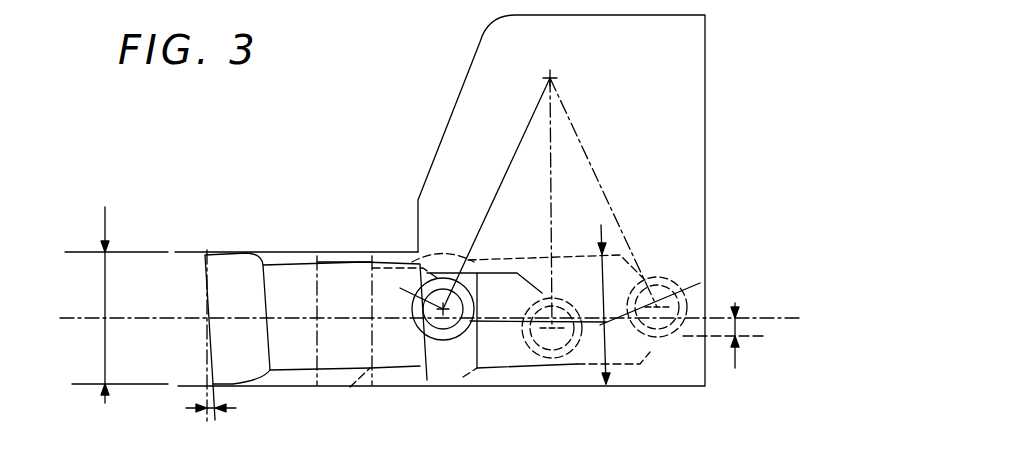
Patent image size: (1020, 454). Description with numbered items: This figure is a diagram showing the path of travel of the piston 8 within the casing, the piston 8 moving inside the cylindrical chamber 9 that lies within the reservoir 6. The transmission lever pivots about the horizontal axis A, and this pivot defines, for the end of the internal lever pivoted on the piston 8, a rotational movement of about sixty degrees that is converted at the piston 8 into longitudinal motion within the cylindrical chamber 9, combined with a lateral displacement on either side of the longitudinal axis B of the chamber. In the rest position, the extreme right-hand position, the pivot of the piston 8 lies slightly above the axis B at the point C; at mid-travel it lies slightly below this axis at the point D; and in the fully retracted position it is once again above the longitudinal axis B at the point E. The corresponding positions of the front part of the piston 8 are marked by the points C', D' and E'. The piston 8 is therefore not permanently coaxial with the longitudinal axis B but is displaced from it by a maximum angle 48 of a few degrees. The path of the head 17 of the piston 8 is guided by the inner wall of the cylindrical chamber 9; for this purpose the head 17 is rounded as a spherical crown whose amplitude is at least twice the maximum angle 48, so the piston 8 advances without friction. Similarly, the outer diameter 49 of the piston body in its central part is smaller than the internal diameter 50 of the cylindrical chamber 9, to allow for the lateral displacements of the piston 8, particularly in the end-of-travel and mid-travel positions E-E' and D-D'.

The reservoir 6 is at (675, 109).
The piston 8 is at (295, 252).
The cylindrical chamber 9 is at (270, 254).
The head 17 is at (249, 253).
The maximum angle 48 is at (236, 408).
The outer diameter 49 is at (601, 228).
The internal diameter 50 is at (105, 222).
The axis A is at (557, 75).
The longitudinal axis B is at (427, 302).
The rest position pivot point C is at (657, 328).
The mid-travel pivot point D is at (537, 331).
The fully retracted pivot point E is at (428, 320).
The front part position C' is at (446, 220).
The front part position D' is at (330, 225).
The front part position E' is at (205, 226).